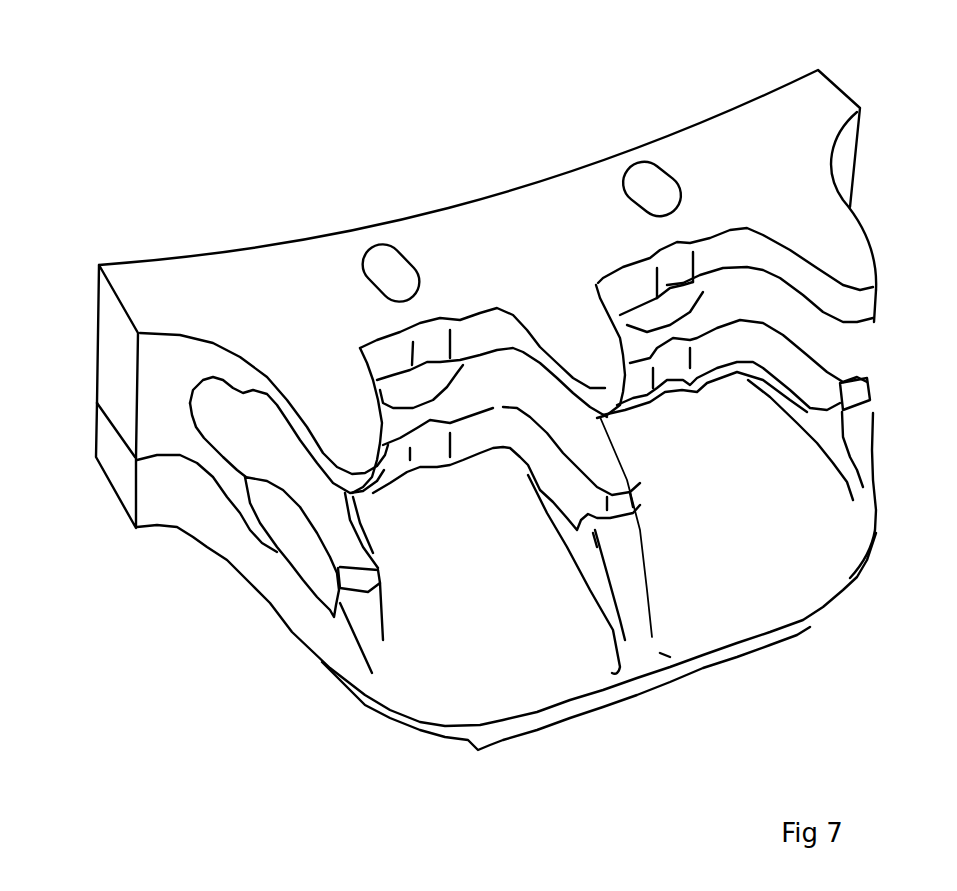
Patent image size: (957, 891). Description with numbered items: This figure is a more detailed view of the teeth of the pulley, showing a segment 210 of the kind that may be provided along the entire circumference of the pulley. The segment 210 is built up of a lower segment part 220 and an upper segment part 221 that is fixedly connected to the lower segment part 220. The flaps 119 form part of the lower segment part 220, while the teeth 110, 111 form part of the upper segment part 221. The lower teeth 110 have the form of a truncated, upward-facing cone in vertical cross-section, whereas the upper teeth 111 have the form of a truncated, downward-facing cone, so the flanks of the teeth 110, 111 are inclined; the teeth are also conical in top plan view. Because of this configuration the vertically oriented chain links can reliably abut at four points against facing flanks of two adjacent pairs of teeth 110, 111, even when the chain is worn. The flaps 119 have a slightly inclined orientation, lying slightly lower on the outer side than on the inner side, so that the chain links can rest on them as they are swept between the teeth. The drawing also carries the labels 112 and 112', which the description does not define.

The segment 210 is at (250, 170).
The upper segment part 221 is at (100, 355).
The lower segment part 220 is at (108, 446).
The lower teeth 110 is at (293, 540).
The upper teeth 111 is at (307, 437).
The middle tooth element 112 is at (561, 491).
The right tooth element 112' is at (734, 257).
The flaps 119 is at (473, 677).